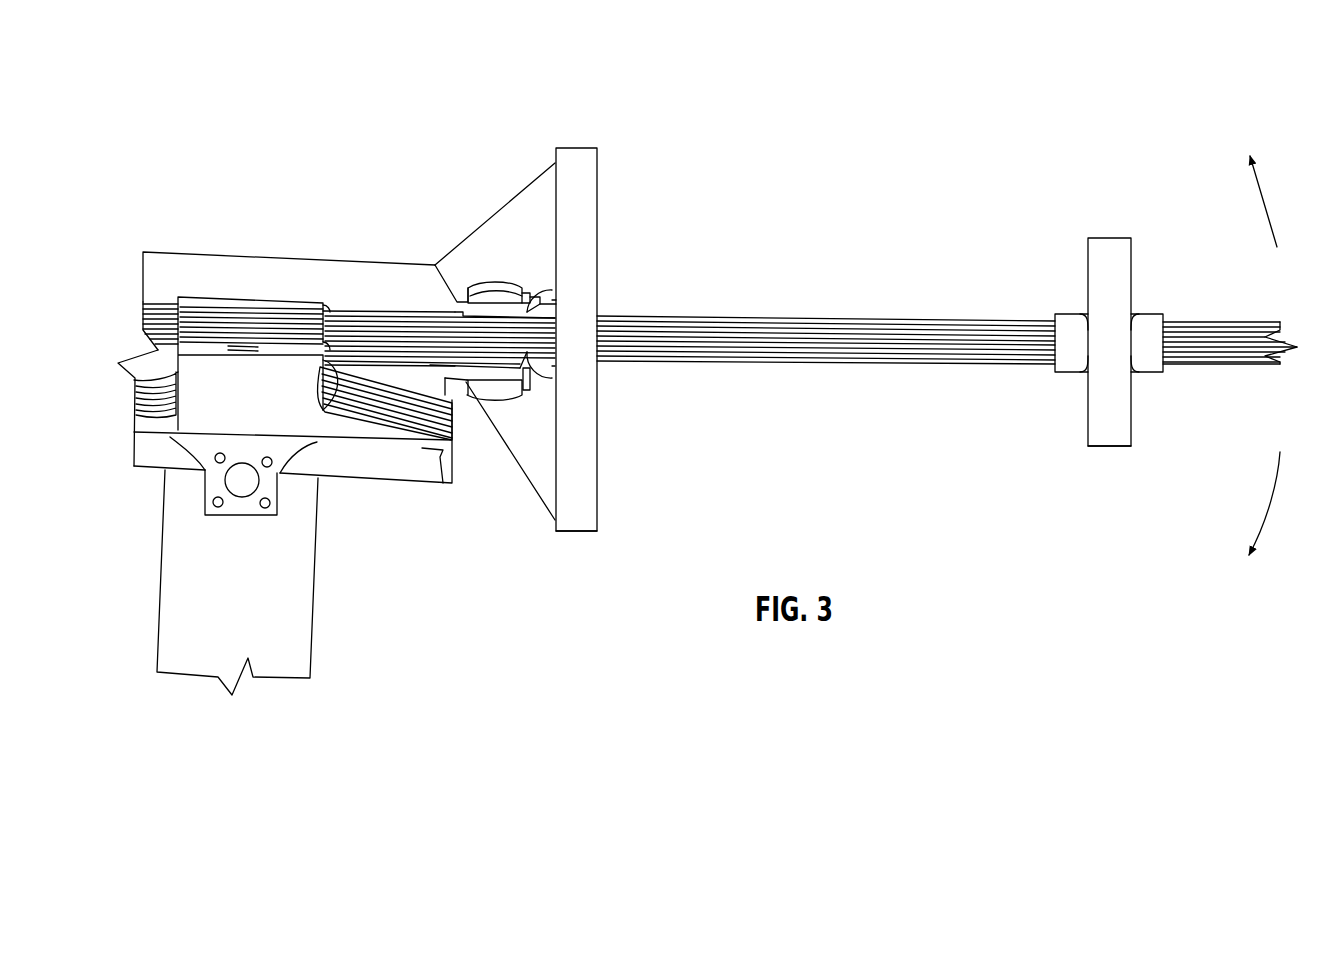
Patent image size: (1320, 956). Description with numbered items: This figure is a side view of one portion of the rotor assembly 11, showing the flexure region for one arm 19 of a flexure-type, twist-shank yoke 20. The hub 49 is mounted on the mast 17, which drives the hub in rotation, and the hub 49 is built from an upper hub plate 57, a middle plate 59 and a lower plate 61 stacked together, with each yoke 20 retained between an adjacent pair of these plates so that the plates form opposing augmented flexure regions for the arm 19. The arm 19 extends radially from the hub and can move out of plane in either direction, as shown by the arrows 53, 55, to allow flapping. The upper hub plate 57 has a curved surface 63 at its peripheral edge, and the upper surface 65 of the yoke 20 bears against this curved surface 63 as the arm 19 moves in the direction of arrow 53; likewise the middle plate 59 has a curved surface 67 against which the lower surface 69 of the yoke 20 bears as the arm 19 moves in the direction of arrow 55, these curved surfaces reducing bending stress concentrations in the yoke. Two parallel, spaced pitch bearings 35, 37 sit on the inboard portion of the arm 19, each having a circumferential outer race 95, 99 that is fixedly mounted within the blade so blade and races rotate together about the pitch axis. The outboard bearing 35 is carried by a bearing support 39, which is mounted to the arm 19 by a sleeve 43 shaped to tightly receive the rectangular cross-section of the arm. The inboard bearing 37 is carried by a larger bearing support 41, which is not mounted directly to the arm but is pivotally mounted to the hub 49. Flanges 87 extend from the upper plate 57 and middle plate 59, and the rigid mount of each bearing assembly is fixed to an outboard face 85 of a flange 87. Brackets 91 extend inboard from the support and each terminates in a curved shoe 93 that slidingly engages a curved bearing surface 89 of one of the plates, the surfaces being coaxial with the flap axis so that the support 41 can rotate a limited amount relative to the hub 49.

The rotor assembly 11 is at (357, 158).
The mast 17 is at (297, 612).
The arm 19 is at (222, 382).
The yoke 20 is at (378, 310).
The pitch bearing 35 is at (1118, 450).
The pitch bearing 37 is at (569, 536).
The bearing support 39 is at (1073, 382).
The bearing support 41 is at (535, 492).
The sleeve 43 is at (1160, 312).
The hub 49 is at (190, 248).
The arrow 53 is at (1257, 190).
The arrow 55 is at (1262, 498).
The upper hub plate 57 is at (335, 272).
The middle plate 59 is at (348, 368).
The lower plate 61 is at (355, 463).
The curved surface 63 is at (555, 325).
The upper surface 65 is at (533, 312).
The curved surface 67 is at (530, 355).
The lower surface 69 is at (160, 420).
The outboard face 85 is at (232, 513).
The flange 87 is at (432, 276).
The curved bearing surface 89 is at (483, 298).
The bracket 91 is at (521, 256).
The curved shoe 93 is at (485, 302).
The outer race 95 is at (1117, 263).
The outer race 99 is at (575, 163).